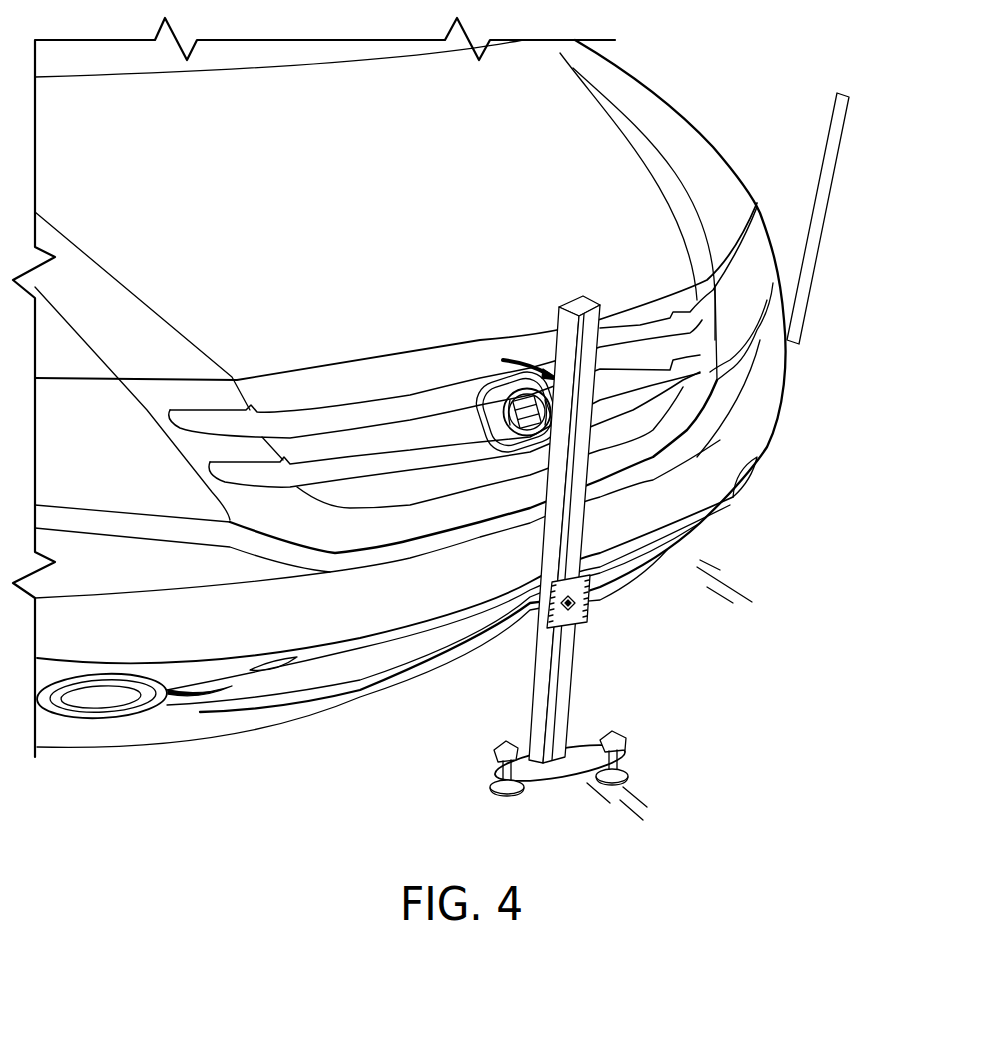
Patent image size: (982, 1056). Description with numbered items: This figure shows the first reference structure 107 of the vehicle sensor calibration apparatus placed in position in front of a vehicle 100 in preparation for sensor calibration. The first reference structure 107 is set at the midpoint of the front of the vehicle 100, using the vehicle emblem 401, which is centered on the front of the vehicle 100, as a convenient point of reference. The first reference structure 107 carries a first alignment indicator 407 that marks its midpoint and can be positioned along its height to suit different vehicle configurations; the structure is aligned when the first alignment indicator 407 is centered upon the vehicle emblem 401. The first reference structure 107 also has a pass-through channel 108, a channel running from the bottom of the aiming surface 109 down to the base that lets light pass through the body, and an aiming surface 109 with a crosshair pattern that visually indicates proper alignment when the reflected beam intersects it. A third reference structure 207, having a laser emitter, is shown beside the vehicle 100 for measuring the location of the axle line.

The vehicle 100 is at (180, 754).
The first reference structure 107 is at (573, 778).
The pass-through channel 108 is at (557, 717).
The aiming surface 109 is at (590, 617).
The third reference structure 207 is at (834, 173).
The vehicle emblem 401 is at (498, 421).
The first alignment indicator 407 is at (543, 368).